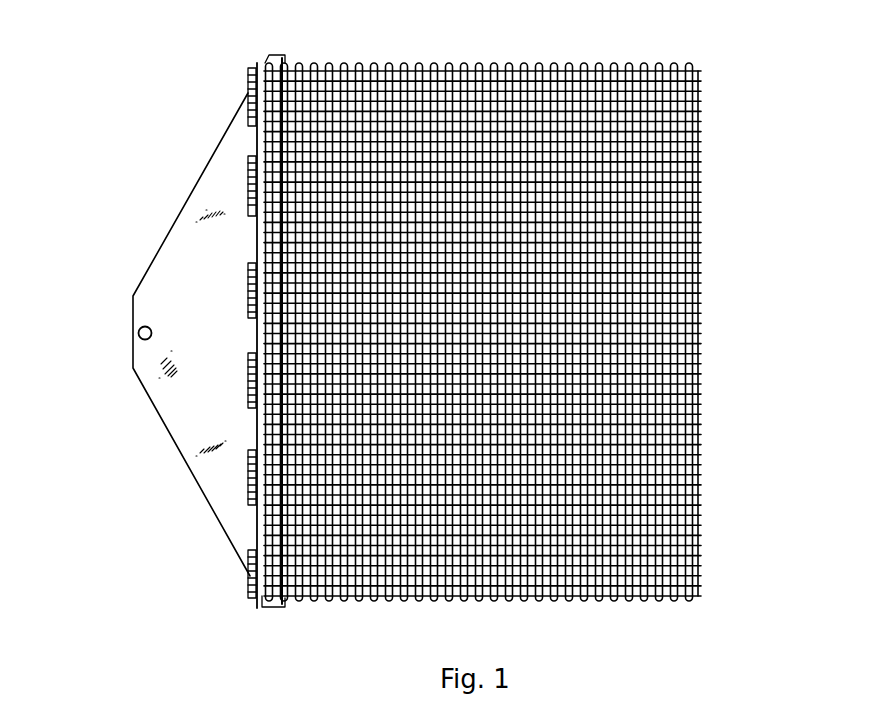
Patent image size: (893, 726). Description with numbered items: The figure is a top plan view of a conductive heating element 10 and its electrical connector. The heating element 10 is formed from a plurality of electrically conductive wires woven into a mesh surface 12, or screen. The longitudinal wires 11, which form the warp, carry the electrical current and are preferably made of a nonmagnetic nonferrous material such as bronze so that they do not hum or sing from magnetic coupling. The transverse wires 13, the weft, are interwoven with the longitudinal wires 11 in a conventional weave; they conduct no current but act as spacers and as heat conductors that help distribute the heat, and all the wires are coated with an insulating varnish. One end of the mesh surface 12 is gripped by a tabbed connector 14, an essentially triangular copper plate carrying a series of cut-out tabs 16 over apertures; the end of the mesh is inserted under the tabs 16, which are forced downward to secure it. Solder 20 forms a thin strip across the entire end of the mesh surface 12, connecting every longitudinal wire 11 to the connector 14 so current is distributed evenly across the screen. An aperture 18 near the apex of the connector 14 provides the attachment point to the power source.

The conductive heating element 10 is at (540, 342).
The longitudinal wires 11 is at (693, 95).
The mesh surface 12 is at (552, 93).
The transverse wires 13 is at (693, 70).
The tabbed connector 14 is at (170, 235).
The cut-out tabs 16 is at (240, 128).
The aperture 18 is at (131, 321).
The solder 20 is at (252, 75).